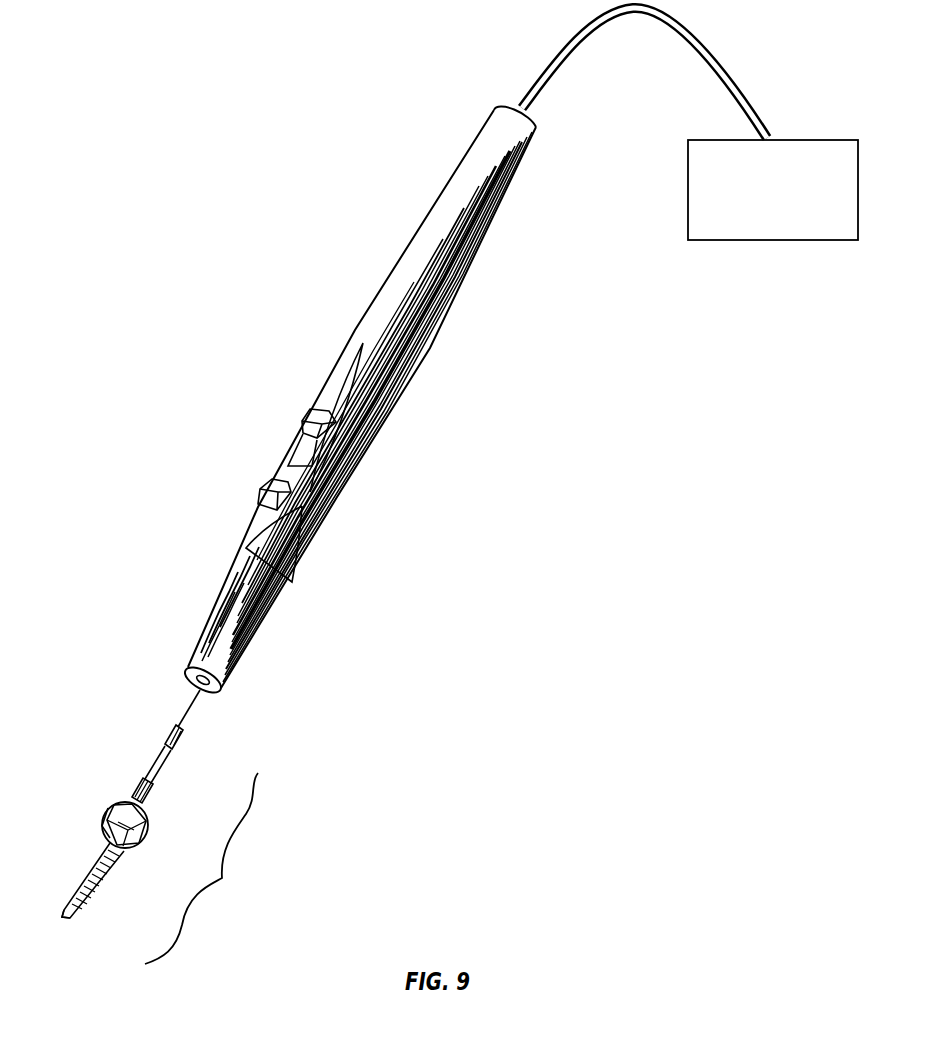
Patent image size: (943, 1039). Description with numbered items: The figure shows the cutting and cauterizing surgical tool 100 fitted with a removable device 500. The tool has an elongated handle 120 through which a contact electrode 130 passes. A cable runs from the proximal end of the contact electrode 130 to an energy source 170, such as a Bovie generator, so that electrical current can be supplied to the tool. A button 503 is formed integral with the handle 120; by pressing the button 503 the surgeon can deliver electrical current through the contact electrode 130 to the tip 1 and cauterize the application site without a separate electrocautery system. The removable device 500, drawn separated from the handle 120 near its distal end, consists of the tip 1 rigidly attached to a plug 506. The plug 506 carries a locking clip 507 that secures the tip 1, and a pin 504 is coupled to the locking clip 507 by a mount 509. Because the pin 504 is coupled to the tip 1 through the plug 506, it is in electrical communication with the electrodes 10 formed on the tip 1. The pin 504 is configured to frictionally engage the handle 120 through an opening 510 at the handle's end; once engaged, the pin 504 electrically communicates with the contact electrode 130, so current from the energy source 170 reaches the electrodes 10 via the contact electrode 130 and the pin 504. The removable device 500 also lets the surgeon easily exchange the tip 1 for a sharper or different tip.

The surgical tool 100 is at (176, 104).
The energy source 170 is at (724, 230).
The handle 120 is at (414, 337).
The contact electrode 130 is at (313, 492).
The button 503 is at (310, 420).
The opening 510 is at (207, 690).
The removable device 500 is at (155, 827).
The pin 504 is at (182, 744).
The mount 509 is at (137, 784).
The locking clip 507 is at (108, 815).
The plug 506 is at (128, 834).
The electrodes 10 is at (102, 868).
The tip 1 is at (76, 909).